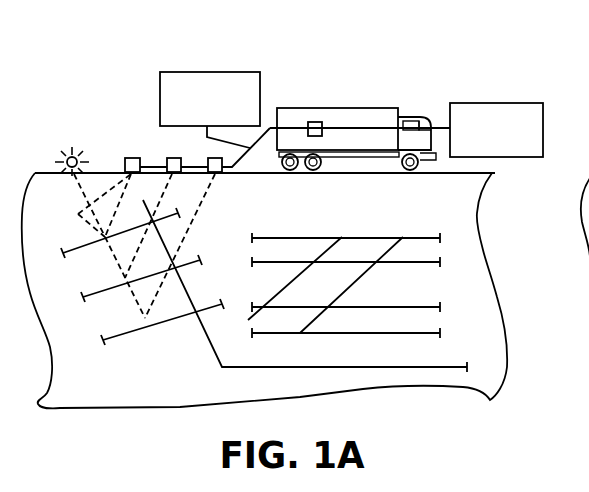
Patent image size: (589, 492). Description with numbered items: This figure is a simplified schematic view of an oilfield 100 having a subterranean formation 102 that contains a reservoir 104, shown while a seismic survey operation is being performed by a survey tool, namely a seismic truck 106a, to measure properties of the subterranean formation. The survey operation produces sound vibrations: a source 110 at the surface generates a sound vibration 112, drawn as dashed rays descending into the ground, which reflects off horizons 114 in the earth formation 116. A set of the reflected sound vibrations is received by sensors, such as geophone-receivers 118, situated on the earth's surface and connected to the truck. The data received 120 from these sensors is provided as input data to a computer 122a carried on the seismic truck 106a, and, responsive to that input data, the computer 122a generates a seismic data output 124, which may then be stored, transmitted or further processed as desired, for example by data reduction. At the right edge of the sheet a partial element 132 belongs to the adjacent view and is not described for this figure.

The oilfield 100 is at (444, 78).
The subterranean formation 102 is at (358, 260).
The reservoir 104 is at (418, 301).
The seismic truck 106a is at (373, 107).
The source 110 is at (70, 152).
The sound vibration 112 is at (78, 210).
The horizons 114 is at (177, 218).
The earth formation 116 is at (207, 343).
The geophone-receivers 118 is at (212, 158).
The data received 120 is at (203, 72).
The computer 122a is at (317, 122).
The seismic data output 124 is at (495, 103).
The adjacent figure element (partial) 132 is at (578, 198).